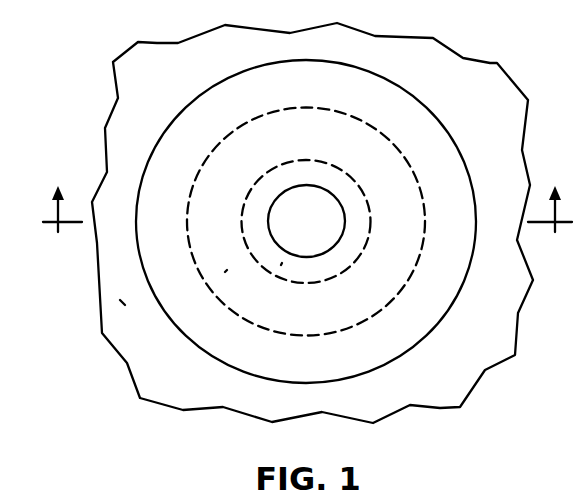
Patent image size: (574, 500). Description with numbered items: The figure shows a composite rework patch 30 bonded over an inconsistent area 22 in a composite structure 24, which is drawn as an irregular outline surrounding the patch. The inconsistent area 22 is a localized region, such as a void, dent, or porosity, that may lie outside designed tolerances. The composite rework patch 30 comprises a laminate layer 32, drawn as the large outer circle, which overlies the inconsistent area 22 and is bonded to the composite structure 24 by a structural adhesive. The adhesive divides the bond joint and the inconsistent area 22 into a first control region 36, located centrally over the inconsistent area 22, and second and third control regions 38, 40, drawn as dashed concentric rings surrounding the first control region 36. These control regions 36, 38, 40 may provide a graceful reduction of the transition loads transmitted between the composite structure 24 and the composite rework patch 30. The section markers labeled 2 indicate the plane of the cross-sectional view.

The inconsistent area 22 is at (330, 178).
The composite structure 24 is at (125, 293).
The composite rework patch 30 is at (448, 100).
The laminate layer 32 is at (432, 313).
The first control region 36 is at (282, 263).
The second control region 38 is at (227, 270).
The third control region 40 is at (163, 240).
The section line 2- 2 is at (307, 192).